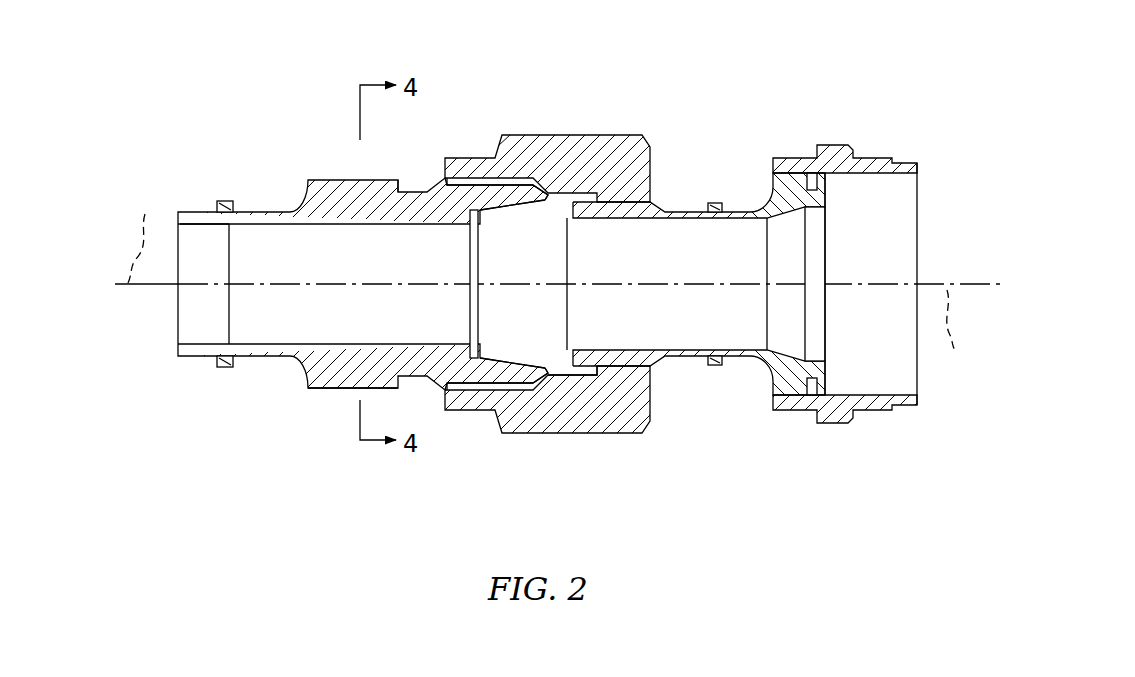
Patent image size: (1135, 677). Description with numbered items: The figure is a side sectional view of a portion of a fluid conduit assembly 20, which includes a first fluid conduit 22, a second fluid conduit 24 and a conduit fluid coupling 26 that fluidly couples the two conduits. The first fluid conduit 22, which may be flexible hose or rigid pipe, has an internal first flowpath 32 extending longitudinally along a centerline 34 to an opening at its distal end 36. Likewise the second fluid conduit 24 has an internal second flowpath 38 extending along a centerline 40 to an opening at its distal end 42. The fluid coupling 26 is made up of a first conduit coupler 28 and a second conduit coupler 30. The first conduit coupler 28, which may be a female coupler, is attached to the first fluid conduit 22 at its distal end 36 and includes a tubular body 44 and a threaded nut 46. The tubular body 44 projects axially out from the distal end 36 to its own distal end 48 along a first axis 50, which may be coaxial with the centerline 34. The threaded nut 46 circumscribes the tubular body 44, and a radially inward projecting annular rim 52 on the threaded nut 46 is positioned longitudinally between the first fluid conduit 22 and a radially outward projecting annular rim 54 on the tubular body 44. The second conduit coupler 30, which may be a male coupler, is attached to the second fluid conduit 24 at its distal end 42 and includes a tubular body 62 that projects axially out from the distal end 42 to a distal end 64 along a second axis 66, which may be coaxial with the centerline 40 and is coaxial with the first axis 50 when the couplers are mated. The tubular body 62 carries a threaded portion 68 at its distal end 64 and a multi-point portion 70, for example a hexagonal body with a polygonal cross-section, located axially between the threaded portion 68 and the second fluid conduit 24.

The fluid conduit assembly 20 is at (245, 103).
The first fluid conduit 22 is at (900, 157).
The second fluid conduit 24 is at (199, 210).
The conduit fluid coupling 26 is at (632, 101).
The first conduit coupler 28 is at (662, 134).
The second conduit coupler 30 is at (348, 178).
The first flowpath 32 is at (888, 257).
The centerline 34 is at (947, 290).
The distal end 36 is at (824, 325).
The second flowpath 38 is at (191, 315).
The centerline 40 is at (128, 283).
The distal end 42 is at (230, 312).
The tubular body 44 is at (738, 196).
The threaded nut 46 is at (560, 133).
The distal end 48 is at (470, 328).
The first axis 50 is at (951, 320).
The annular rim 52 is at (640, 378).
The annular rim 54 is at (573, 380).
The tubular body 62 is at (346, 394).
The distal end 64 is at (557, 385).
The second axis 66 is at (136, 248).
The threaded portion 68 is at (473, 182).
The multi-point portion 70 is at (379, 178).